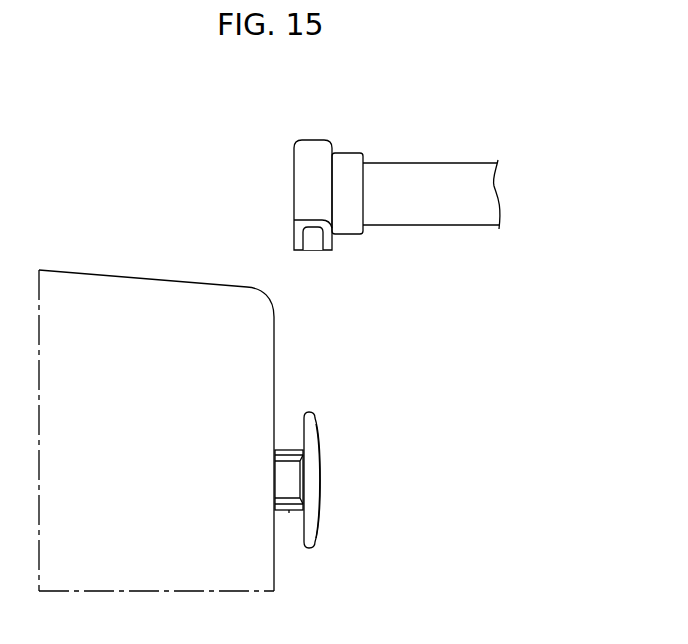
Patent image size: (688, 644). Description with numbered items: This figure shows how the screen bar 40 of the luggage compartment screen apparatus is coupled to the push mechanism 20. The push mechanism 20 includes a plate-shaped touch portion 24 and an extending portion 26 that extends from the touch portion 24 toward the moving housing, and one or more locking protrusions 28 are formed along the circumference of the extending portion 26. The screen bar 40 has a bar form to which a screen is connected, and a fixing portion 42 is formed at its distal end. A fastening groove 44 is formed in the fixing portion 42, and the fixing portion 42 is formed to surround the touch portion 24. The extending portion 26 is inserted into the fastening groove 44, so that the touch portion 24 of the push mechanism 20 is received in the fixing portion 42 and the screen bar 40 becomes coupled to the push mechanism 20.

The push mechanism 20 is at (348, 514).
The touch portion 24 is at (311, 423).
The extending portion 26 is at (289, 480).
The locking protrusion 28 is at (290, 513).
The screen bar 40 is at (352, 206).
The fixing portion 42 is at (285, 243).
The fastening groove 44 is at (322, 243).